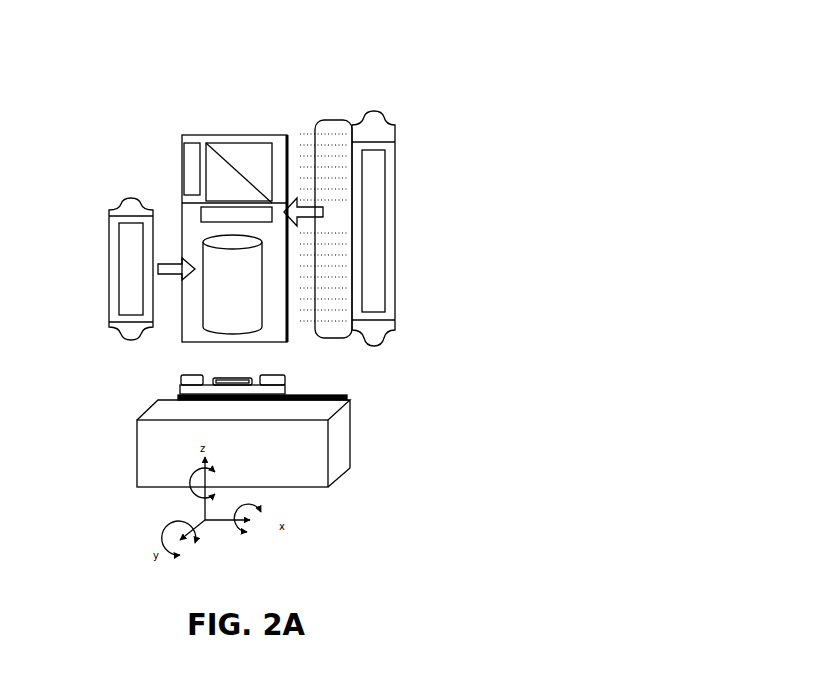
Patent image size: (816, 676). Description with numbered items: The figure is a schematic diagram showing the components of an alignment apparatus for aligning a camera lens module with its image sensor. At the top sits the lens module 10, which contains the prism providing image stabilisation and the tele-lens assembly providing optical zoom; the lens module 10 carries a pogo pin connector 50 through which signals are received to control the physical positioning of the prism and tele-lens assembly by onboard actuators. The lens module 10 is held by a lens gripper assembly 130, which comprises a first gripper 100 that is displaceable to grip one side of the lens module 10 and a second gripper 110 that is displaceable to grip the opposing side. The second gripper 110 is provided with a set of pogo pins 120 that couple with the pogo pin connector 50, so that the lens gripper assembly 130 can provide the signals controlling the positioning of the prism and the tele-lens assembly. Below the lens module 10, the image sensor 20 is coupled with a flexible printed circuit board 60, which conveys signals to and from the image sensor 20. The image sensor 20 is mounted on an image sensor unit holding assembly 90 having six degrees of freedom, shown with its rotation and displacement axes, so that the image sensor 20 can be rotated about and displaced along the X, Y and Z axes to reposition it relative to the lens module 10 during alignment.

The lens module 10 is at (198, 133).
The pogo pin connector 50 is at (273, 144).
The first gripper 100 is at (128, 198).
The set of pogo pins 120 is at (318, 119).
The second gripper 110 is at (382, 170).
The lens gripper assembly 130 is at (447, 233).
The image sensor unit holding assembly 90 is at (318, 467).
The flexible printed circuit board 60 is at (340, 395).
The image sensor 20 is at (178, 382).